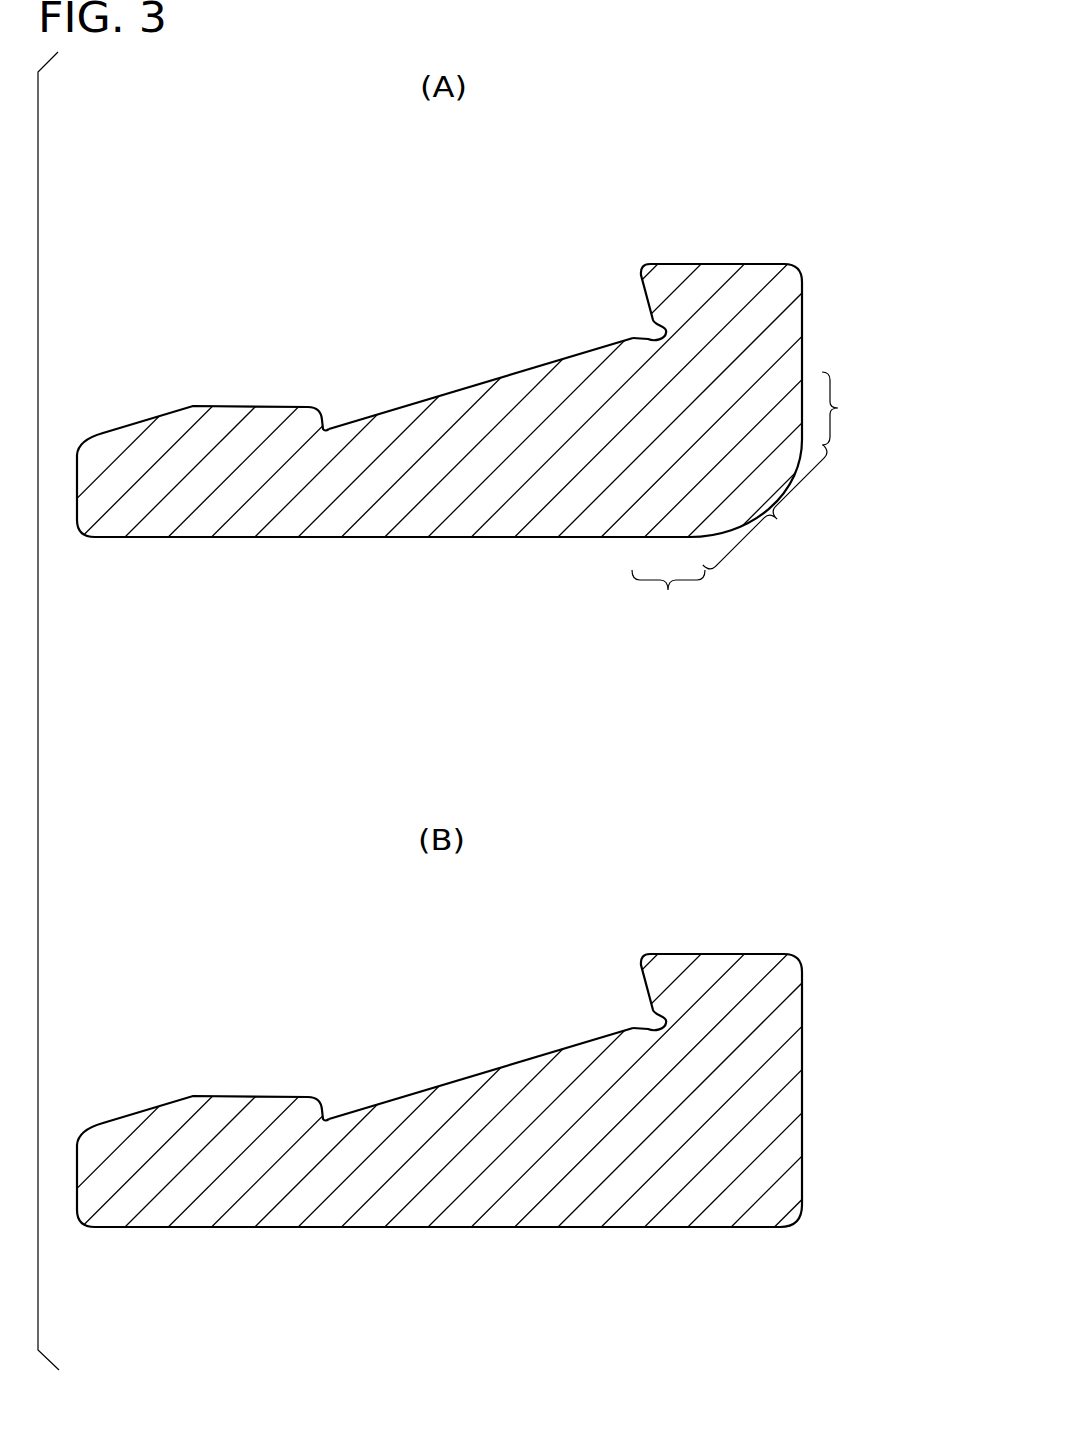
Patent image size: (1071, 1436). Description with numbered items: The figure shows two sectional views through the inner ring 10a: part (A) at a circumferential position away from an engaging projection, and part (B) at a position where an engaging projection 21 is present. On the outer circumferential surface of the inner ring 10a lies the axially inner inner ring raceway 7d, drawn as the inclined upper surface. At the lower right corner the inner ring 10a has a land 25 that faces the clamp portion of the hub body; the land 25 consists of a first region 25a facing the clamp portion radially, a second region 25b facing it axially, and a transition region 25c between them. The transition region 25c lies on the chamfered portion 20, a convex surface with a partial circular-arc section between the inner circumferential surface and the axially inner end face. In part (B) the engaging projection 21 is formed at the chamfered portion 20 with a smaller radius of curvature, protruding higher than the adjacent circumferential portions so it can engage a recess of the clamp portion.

The inner ring raceway 7d is at (486, 380).
The inner ring 10a is at (425, 516).
The chamfered portion 20 is at (773, 503).
The engaging projection 21 is at (787, 1210).
The land 25 is at (783, 507).
The first region 25a is at (672, 601).
The second region 25b is at (881, 408).
The transition region 25c is at (780, 524).